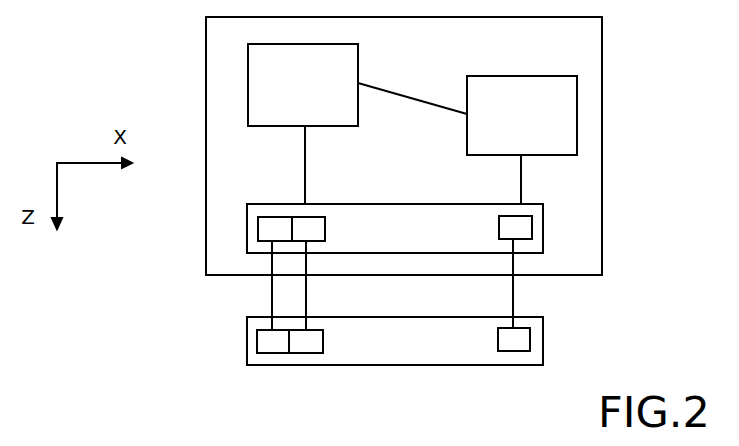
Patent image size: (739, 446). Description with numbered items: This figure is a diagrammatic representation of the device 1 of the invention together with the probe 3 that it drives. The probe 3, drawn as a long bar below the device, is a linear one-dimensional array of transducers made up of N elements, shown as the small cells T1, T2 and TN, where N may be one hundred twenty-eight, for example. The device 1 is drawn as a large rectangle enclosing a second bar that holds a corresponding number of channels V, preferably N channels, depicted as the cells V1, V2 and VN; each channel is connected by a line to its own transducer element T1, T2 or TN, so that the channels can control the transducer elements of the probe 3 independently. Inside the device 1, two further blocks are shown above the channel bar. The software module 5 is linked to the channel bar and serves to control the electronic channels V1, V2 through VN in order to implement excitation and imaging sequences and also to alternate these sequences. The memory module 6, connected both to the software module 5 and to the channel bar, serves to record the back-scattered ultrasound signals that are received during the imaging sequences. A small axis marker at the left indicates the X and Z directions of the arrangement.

The device 1 is at (582, 194).
The probe 3 is at (251, 352).
The software module 5 is at (507, 95).
The memory module 6 is at (260, 95).
The first channel V1 is at (275, 228).
The second channel V2 is at (318, 228).
The Nth channel VN is at (508, 228).
The first transducer element T1 is at (272, 345).
The second transducer element T2 is at (318, 342).
The Nth transducer element TN is at (512, 340).